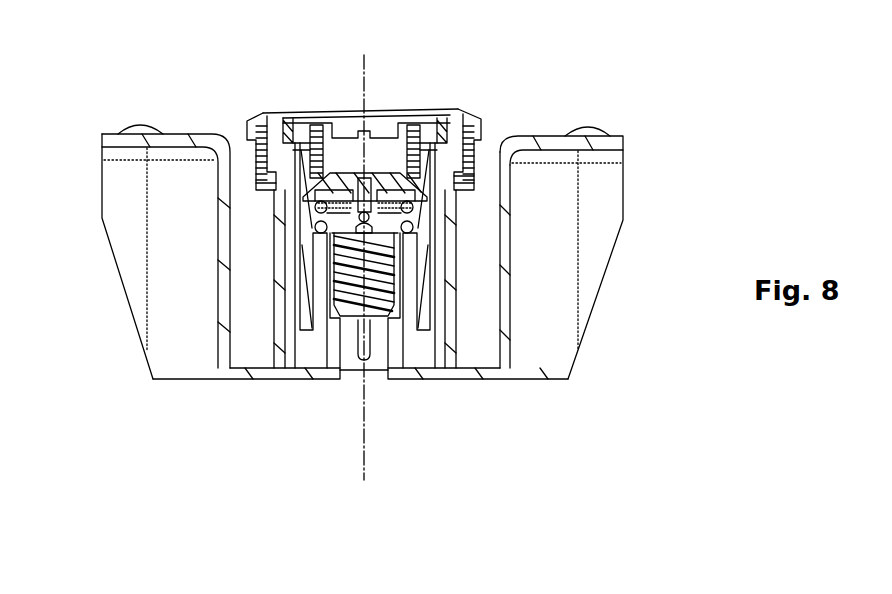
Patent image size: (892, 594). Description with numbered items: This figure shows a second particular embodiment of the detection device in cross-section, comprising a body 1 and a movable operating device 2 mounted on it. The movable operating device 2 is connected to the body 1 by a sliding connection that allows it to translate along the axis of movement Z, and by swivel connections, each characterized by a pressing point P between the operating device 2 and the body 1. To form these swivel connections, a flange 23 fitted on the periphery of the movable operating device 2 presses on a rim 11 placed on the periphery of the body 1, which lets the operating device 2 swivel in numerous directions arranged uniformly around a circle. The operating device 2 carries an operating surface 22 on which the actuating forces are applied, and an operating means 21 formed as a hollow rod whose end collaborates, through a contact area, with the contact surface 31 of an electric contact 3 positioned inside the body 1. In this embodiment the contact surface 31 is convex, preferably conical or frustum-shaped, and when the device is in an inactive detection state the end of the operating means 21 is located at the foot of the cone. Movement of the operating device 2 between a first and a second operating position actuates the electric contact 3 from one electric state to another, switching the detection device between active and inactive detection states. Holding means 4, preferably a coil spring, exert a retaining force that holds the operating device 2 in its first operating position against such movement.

The movable operating device 2 is at (539, 111).
The rim 11 is at (258, 167).
The operating means 21 is at (301, 150).
The operating surface 22 is at (410, 108).
The flange 23 is at (258, 184).
The contact surface 31 is at (292, 196).
The electric contact 3 is at (388, 258).
The holding means 4 is at (424, 206).
The pressing point P is at (468, 174).
The axis of movement Z is at (367, 68).
The body 1 is at (452, 323).